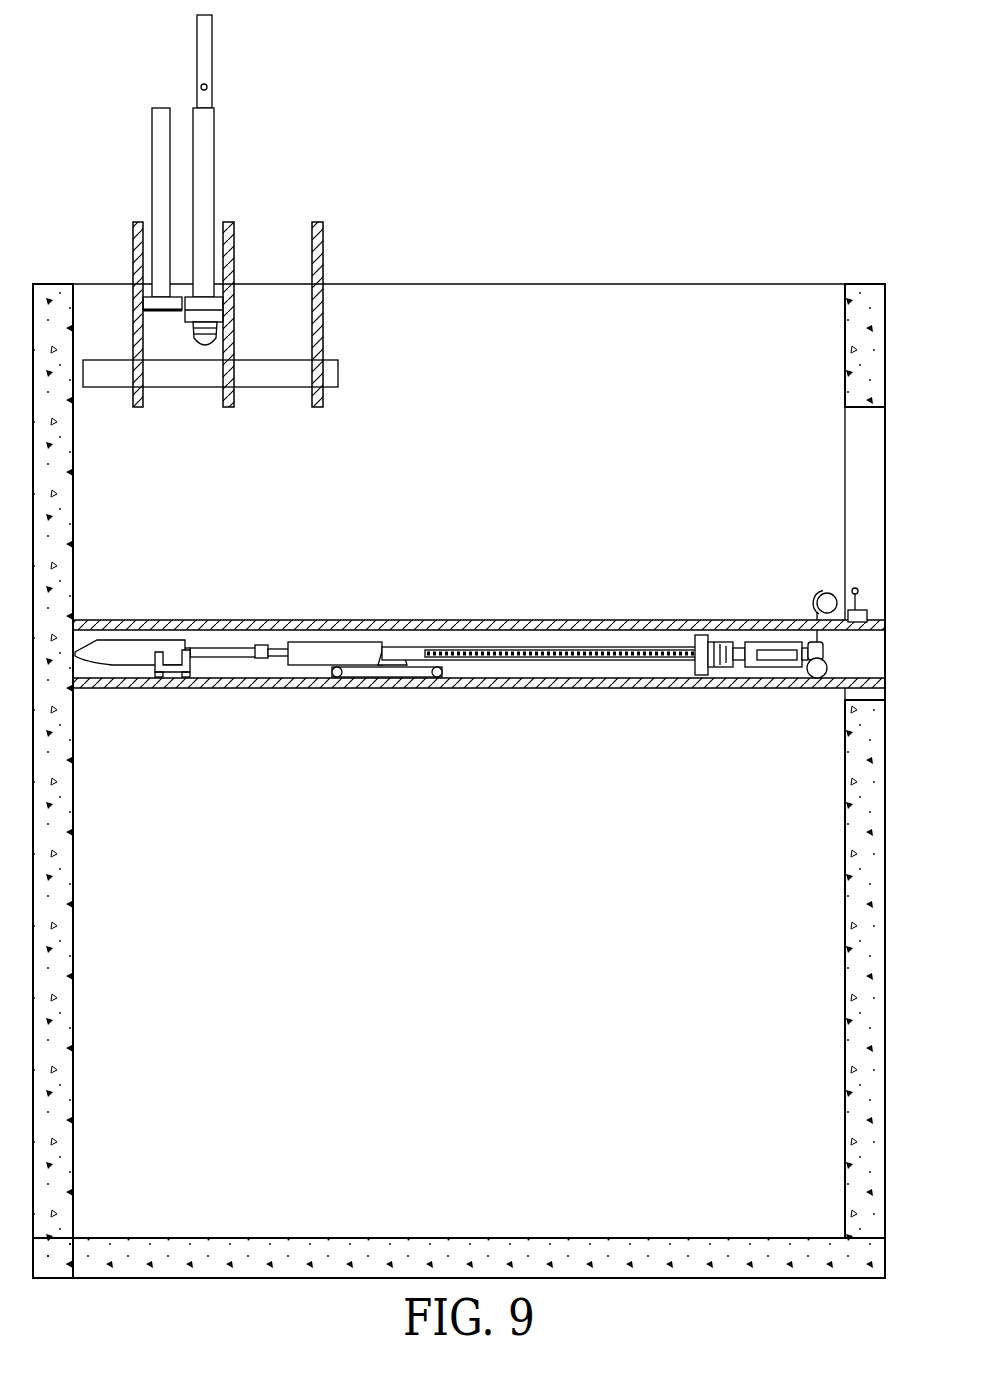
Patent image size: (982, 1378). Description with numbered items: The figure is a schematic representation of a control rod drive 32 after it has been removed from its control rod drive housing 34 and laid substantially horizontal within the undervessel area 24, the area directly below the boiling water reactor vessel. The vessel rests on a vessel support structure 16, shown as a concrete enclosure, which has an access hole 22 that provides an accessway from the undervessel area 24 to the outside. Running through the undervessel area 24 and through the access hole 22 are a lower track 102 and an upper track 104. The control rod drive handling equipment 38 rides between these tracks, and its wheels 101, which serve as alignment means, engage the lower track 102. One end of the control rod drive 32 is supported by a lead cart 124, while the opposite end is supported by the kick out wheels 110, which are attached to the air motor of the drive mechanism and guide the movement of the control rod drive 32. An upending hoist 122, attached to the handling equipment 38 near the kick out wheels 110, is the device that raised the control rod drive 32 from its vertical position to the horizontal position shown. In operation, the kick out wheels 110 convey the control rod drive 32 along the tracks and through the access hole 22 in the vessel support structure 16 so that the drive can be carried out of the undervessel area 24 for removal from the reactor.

The vessel support structure 16 is at (844, 360).
The access hole 22 is at (844, 477).
The undervessel area 24 is at (808, 1182).
The control rod drive 32 is at (213, 46).
The control rod drive housing 34 is at (152, 158).
The control rod drive handling equipment 38 is at (638, 650).
The wheels 101 is at (450, 668).
The lower track 102 is at (508, 688).
The upper track 104 is at (477, 620).
The kick out wheels 110 is at (807, 676).
The upending hoist 122 is at (827, 592).
The lead cart 124 is at (197, 658).